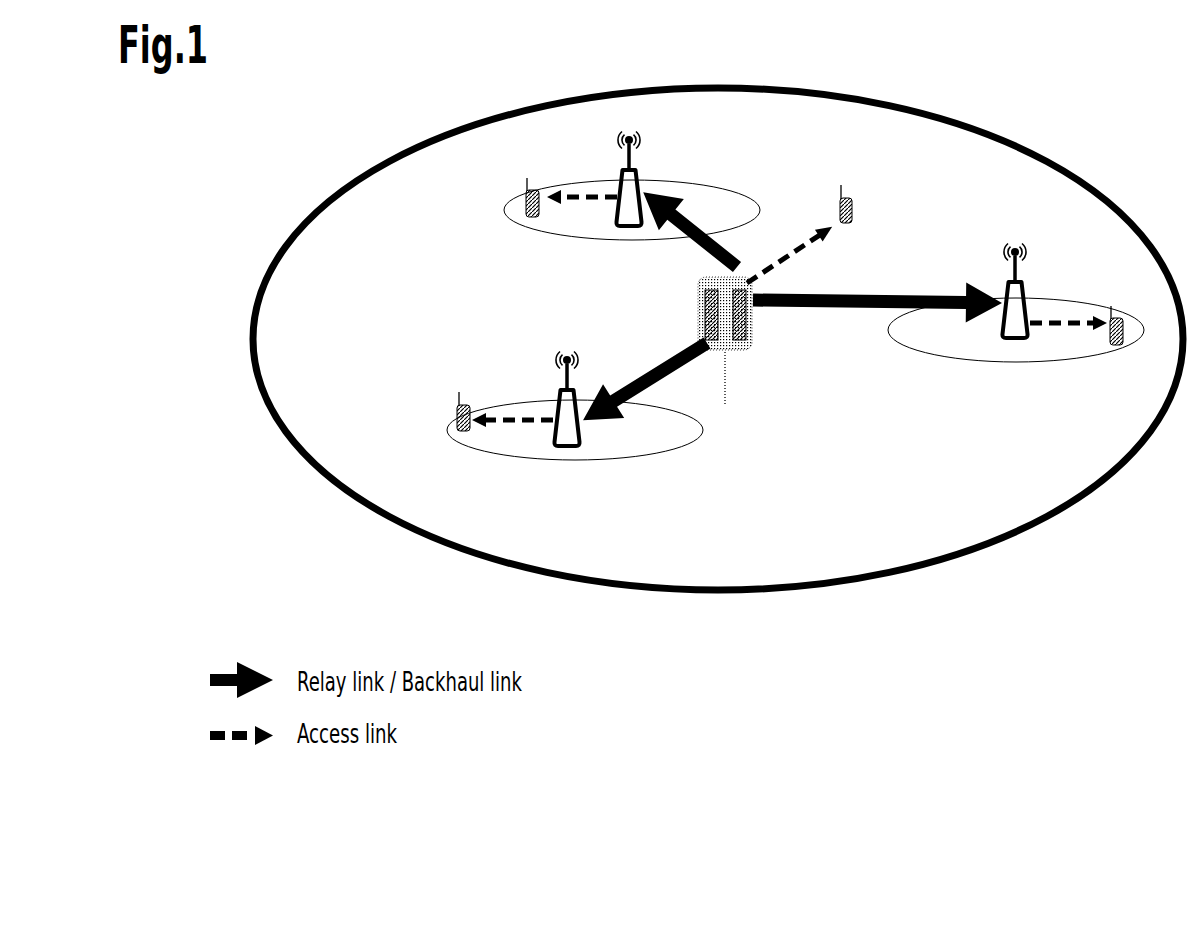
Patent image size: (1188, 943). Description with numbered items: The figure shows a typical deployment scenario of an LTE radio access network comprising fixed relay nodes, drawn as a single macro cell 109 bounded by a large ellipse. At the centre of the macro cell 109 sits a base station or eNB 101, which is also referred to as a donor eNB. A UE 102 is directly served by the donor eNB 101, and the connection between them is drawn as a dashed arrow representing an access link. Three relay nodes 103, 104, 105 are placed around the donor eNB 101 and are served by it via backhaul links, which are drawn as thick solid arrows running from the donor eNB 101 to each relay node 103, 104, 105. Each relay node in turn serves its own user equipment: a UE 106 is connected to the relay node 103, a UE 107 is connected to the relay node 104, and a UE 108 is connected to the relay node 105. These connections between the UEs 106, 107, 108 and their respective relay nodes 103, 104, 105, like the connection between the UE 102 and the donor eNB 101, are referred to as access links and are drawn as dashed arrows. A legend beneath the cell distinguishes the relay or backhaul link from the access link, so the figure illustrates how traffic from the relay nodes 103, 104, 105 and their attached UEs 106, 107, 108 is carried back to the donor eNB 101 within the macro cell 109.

The base station or eNB 101 is at (747, 327).
The UE 102 is at (852, 204).
The relay node 103 is at (1015, 341).
The relay node 104 is at (567, 448).
The relay node 105 is at (628, 228).
The UE 106 is at (1116, 346).
The UE 107 is at (463, 432).
The UE 108 is at (531, 218).
The macro cell 109 is at (1083, 498).